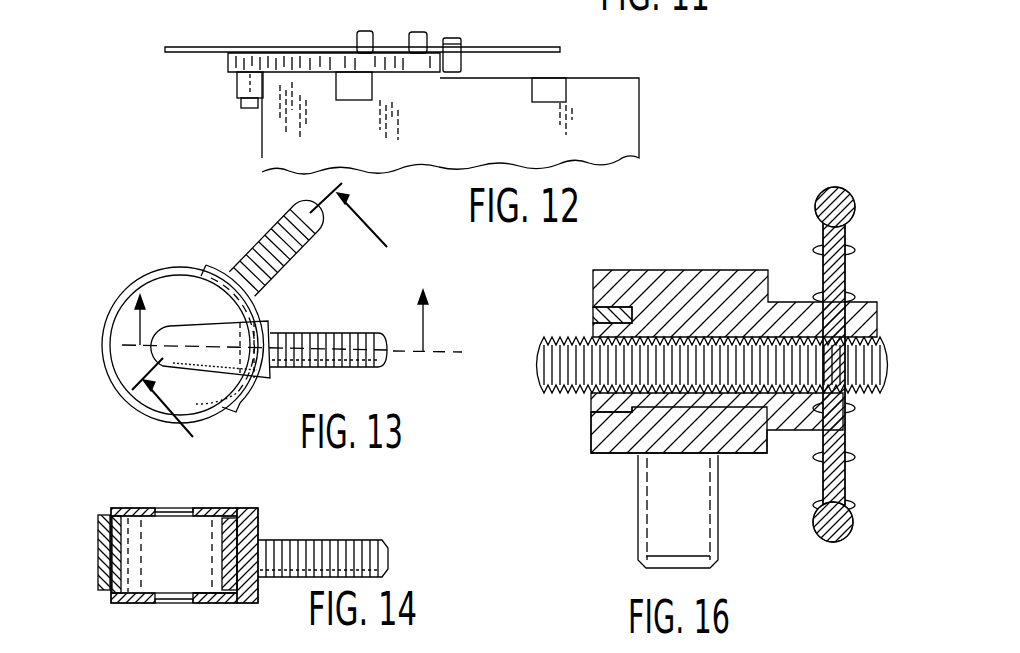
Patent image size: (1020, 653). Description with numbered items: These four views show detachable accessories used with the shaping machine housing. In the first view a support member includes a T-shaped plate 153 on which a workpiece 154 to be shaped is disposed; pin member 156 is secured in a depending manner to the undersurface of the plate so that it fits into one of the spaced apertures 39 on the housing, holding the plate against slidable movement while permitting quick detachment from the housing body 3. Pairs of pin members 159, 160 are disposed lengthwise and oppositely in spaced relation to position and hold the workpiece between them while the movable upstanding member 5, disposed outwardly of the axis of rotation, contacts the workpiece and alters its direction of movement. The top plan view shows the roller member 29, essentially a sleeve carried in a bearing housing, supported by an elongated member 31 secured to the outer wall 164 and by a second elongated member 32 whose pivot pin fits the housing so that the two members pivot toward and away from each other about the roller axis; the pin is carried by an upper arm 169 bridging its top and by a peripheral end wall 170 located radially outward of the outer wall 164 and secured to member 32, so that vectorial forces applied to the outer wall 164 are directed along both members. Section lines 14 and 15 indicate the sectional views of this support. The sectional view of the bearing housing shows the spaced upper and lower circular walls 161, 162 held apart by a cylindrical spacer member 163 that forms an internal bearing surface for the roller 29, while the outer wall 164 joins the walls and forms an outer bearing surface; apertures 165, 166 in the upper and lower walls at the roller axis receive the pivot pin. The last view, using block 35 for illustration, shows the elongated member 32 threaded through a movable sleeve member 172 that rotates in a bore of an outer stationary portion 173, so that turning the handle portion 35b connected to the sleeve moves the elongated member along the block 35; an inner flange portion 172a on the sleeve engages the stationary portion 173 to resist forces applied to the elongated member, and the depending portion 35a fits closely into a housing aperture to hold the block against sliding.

In FIG. 12, the base member 3 is at (616, 133).
In FIG. 12, the movable upstanding member 5 is at (459, 72).
In FIG. 12, the apertures 39 is at (236, 88).
In FIG. 12, the T-shaped plate 153 is at (238, 59).
In FIG. 12, the workpiece 154 is at (216, 47).
In FIG. 12, the pin member 156 is at (246, 108).
In FIG. 12, the pin member 159 is at (419, 32).
In FIG. 12, the pin member 160 is at (365, 31).
In FIG. 13, the section line 14— 14 is at (268, 320).
In FIG. 13, the section line 15— 15 is at (281, 321).
In FIG. 13, the roller member 29 is at (148, 282).
In FIG. 14, the roller member 29 is at (98, 562).
In FIG. 13, the elongated member 31 is at (242, 258).
In FIG. 14, the elongated member 31 is at (323, 540).
In FIG. 13, the outer wall 164 is at (236, 410).
In FIG. 14, the outer wall 164 is at (262, 512).
In FIG. 13, the upper arm 169 is at (265, 325).
In FIG. 14, the upper arm 169 is at (251, 652).
In FIG. 13, the peripheral end wall 170 is at (270, 372).
In FIG. 14, the upper circular wall 161 is at (120, 510).
In FIG. 14, the lower circular wall 162 is at (200, 603).
In FIG. 14, the cylindrical spacer member 163 is at (128, 525).
In FIG. 14, the aperture 165 is at (160, 516).
In FIG. 14, the aperture 166 is at (160, 598).
In FIG. 16, the elongated member 32 is at (536, 373).
In FIG. 16, the block 35 is at (680, 282).
In FIG. 16, the depending portion 35a is at (646, 513).
In FIG. 16, the handle portion 35b is at (836, 190).
In FIG. 16, the movable sleeve member 172 is at (628, 412).
In FIG. 16, the inner flange portion 172a is at (626, 413).
In FIG. 16, the outer stationary portion 173 is at (598, 292).